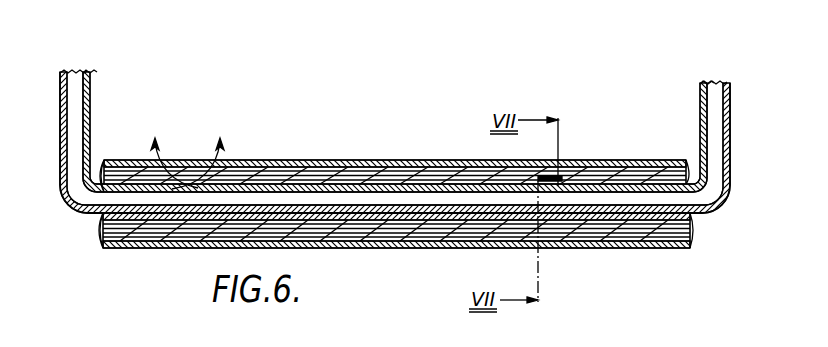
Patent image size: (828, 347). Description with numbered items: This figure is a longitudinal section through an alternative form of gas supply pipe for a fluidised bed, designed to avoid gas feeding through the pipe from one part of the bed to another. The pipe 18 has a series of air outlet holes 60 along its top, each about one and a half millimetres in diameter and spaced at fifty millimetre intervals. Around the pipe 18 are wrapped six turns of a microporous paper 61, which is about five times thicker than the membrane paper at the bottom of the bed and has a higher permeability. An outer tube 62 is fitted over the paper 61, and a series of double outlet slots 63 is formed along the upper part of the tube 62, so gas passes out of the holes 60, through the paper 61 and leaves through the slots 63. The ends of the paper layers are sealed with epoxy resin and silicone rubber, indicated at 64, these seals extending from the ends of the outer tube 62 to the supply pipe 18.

The gas supply pipe 18 is at (714, 220).
The air outlet holes 60 is at (639, 181).
The microporous paper 61 is at (497, 232).
The outer tube 62 is at (395, 247).
The double outlet slots 63 is at (393, 159).
The seals 64 is at (106, 236).